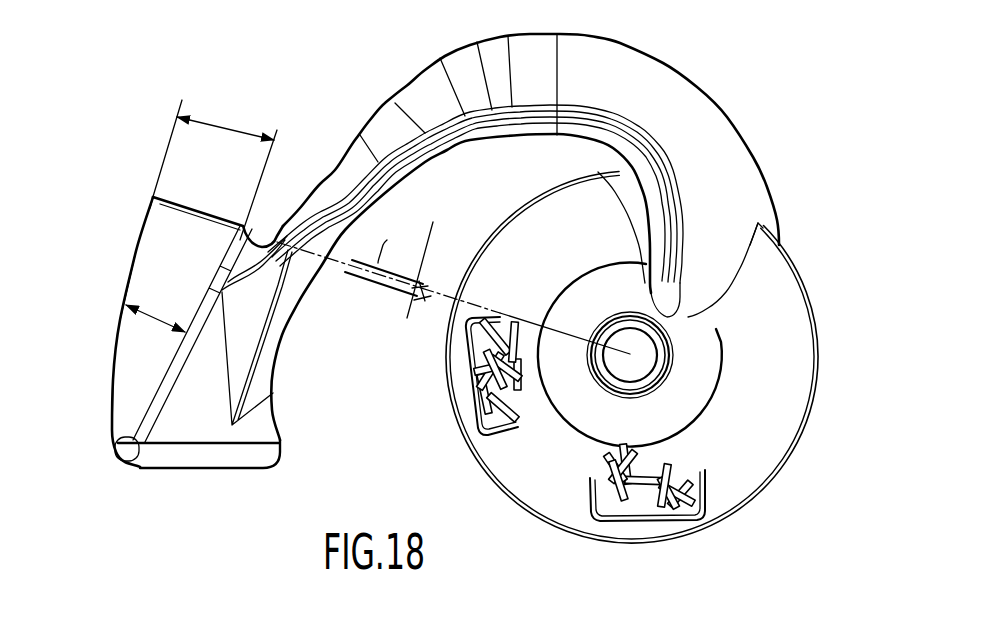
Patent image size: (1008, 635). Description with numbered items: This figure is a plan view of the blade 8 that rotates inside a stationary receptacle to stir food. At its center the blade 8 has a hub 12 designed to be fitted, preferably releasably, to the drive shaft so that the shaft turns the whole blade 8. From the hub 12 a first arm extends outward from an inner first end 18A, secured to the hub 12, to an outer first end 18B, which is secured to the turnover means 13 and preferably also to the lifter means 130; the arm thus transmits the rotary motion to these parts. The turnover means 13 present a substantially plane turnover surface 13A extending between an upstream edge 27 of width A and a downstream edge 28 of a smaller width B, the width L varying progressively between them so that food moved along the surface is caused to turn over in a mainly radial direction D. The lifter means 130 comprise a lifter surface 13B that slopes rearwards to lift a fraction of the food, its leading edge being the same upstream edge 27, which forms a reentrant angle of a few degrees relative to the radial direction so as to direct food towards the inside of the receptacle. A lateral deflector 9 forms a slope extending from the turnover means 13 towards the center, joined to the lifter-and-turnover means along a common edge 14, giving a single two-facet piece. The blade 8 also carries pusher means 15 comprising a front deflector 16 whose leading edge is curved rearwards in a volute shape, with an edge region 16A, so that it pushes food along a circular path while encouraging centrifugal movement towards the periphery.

The blade 8 is at (460, 275).
The lateral deflector 9 is at (193, 423).
The hub 12 is at (750, 455).
The turnover means 13 is at (175, 299).
The turnover surface 13A is at (133, 382).
The lifter surface 13B is at (163, 217).
The lifter means 130 is at (158, 264).
The common edge 14 is at (158, 393).
The pusher means 15 is at (657, 82).
The front deflector 16 is at (692, 110).
The housing cavity edge 16A is at (672, 213).
The inner first end 18A is at (760, 258).
The outer first end 18B is at (288, 348).
The upstream edge 27 is at (185, 200).
The downstream edge 28 is at (120, 467).